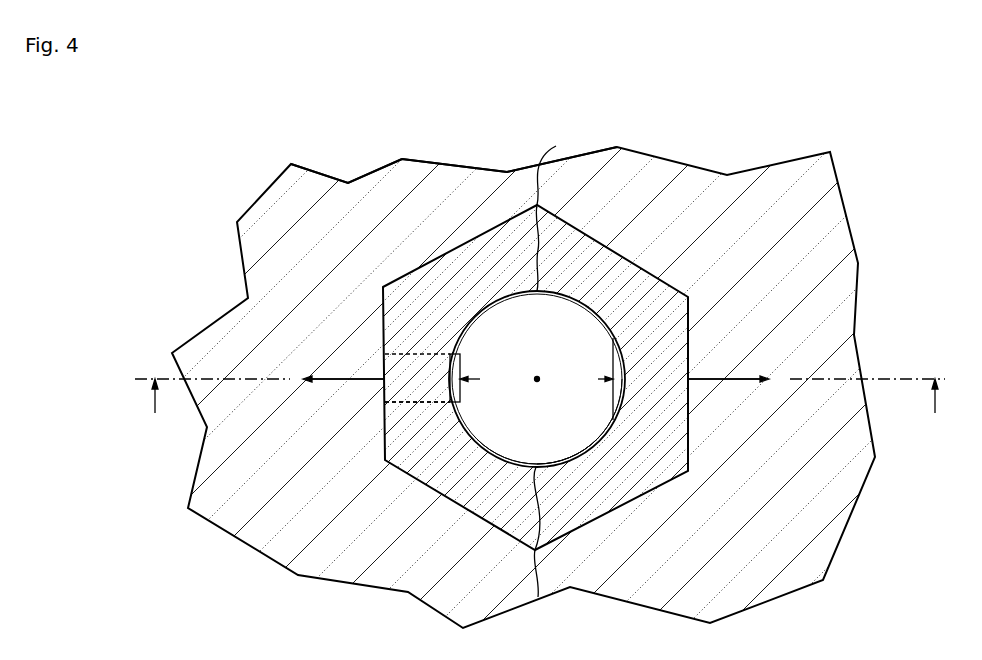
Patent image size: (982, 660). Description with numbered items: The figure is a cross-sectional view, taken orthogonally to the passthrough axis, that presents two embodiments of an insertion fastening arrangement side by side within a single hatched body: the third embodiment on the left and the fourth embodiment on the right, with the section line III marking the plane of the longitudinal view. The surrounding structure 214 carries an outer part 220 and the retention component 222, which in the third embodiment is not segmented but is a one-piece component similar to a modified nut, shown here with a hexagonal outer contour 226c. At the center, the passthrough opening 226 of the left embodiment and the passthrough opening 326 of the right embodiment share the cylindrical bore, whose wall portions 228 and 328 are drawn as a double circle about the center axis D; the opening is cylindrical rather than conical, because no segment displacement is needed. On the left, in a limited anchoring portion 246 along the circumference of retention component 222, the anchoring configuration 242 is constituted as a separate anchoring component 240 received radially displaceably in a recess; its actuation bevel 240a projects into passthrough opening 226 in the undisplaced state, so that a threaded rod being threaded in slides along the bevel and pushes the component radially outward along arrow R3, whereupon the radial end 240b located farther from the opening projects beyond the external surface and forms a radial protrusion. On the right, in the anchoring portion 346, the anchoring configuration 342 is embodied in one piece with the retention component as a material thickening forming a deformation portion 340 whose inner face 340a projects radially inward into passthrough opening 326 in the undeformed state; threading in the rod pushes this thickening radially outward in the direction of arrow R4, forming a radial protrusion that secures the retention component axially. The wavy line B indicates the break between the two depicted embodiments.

The gear / shaft component body 214 is at (270, 155).
The outer body portion 220 is at (323, 188).
The retention component 222 is at (424, 226).
The hexagonal bore portion 226c is at (482, 227).
The passthrough opening 226 is at (537, 379).
The passthrough opening 326 is at (556, 321).
The bore wall 228 is at (502, 454).
The bore wall 328 is at (588, 448).
The anchoring component 240 is at (422, 361).
The anchoring configuration 242 is at (410, 362).
The actuation bevel 240a is at (490, 378).
The radial end 240b is at (373, 401).
The deformation portion 340 is at (578, 378).
The anchoring configuration 342 is at (618, 358).
The flat surface 340a is at (598, 380).
The anchoring portion 246 is at (362, 357).
The anchoring portion 346 is at (712, 371).
The arrow R3 is at (330, 379).
The arrow R4 is at (737, 380).
The center axis D is at (540, 377).
The section plane B is at (549, 365).
The section line III is at (153, 408).